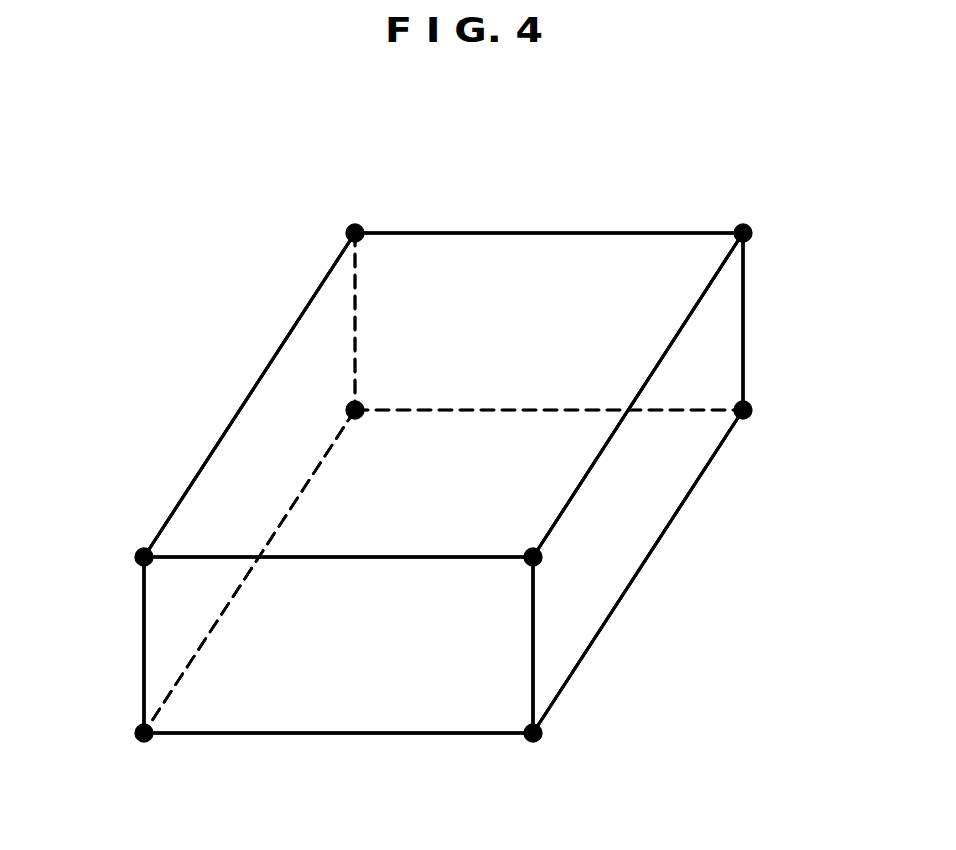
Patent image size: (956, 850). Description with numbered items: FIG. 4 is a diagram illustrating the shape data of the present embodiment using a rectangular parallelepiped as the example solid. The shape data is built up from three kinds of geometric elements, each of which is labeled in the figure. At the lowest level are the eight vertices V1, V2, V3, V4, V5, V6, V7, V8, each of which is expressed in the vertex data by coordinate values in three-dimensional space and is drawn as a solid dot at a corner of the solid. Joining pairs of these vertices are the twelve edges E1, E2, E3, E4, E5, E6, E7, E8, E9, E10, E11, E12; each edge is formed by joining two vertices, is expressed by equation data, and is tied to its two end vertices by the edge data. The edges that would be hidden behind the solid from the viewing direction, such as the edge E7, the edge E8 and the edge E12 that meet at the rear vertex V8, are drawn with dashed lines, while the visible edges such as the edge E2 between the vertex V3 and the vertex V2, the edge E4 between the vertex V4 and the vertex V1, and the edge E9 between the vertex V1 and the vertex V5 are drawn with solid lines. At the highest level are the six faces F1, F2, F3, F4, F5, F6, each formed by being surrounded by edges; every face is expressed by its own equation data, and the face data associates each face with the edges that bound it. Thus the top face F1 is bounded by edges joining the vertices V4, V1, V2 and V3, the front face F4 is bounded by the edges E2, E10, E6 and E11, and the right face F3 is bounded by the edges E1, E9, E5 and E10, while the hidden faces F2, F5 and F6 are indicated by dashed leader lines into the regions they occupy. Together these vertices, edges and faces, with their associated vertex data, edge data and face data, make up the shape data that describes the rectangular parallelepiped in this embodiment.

The vertex V1 is at (748, 231).
The vertex V2 is at (528, 548).
The vertex V3 is at (140, 548).
The vertex V4 is at (351, 227).
The vertex V5 is at (748, 408).
The vertex V6 is at (537, 742).
The vertex V7 is at (140, 745).
The vertex V8 is at (352, 400).
The edge E1 is at (641, 389).
The edge E2 is at (323, 555).
The edge E3 is at (215, 440).
The edge E4 is at (513, 232).
The edge E5 is at (661, 540).
The edge E6 is at (293, 735).
The edge E7 is at (260, 545).
The edge E8 is at (428, 410).
The edge E9 is at (745, 332).
The edge E10 is at (530, 642).
The edge E11 is at (143, 642).
The edge E12 is at (354, 322).
The face F1 is at (413, 255).
The face F2 is at (383, 690).
The face F3 is at (673, 465).
The face F4 is at (257, 706).
The face F5 is at (270, 441).
The face F6 is at (607, 312).